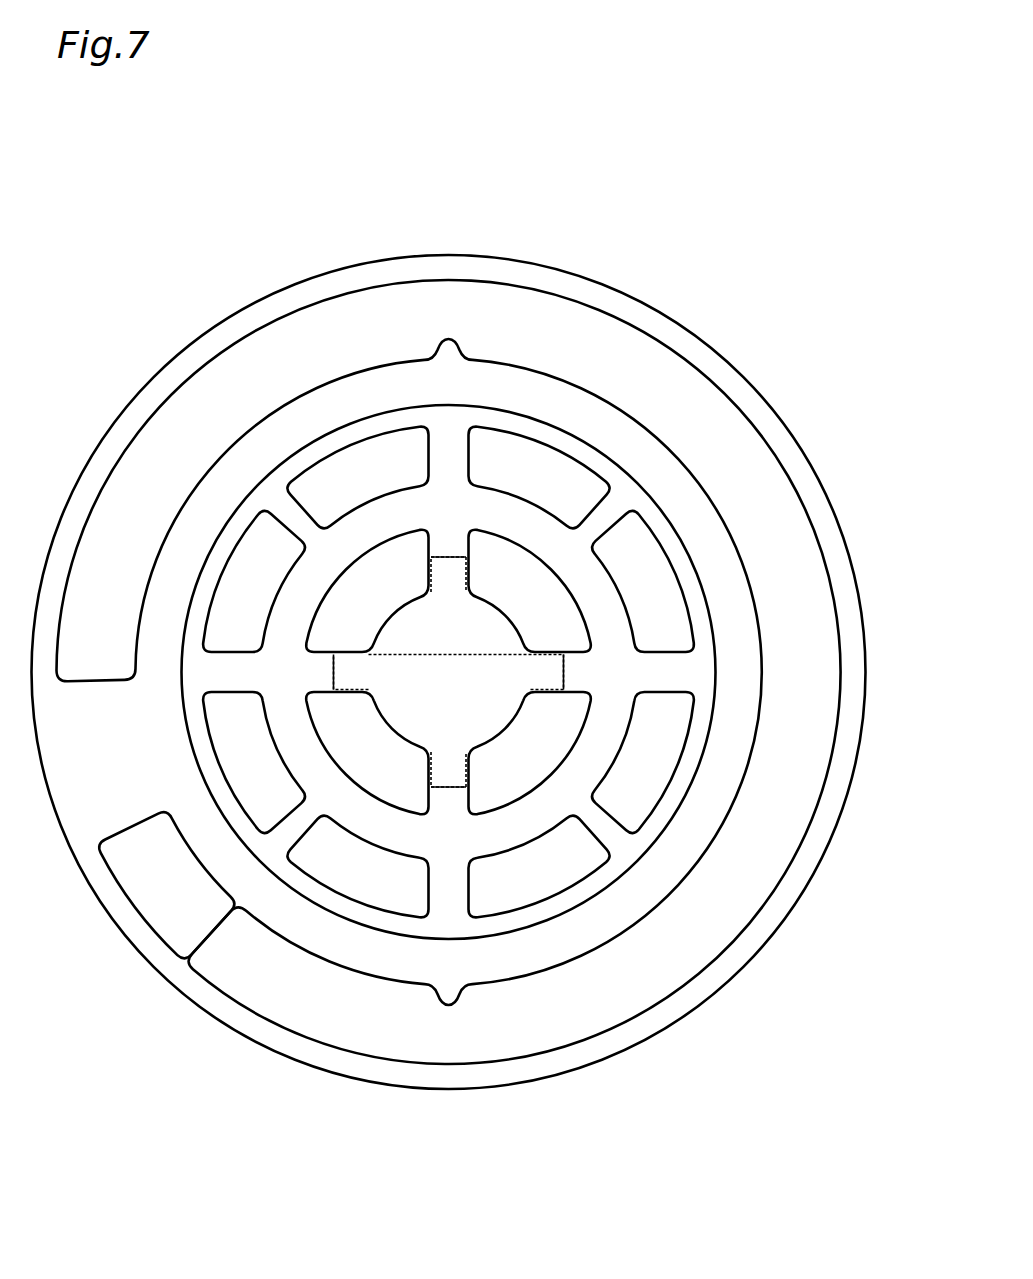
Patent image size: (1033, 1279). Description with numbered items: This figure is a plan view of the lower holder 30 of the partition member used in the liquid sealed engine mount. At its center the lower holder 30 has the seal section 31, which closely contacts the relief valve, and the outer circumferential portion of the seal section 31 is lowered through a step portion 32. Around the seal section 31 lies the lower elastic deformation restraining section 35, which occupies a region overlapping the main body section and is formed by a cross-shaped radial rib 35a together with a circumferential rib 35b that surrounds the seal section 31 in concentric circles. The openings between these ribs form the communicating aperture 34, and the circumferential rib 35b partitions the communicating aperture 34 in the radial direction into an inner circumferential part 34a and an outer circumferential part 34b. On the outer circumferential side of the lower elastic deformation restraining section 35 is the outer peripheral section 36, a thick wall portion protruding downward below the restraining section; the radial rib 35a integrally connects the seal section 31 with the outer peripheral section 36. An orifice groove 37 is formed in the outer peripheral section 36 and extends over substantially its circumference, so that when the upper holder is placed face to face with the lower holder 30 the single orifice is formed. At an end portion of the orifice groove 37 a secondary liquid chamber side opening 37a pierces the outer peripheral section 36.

The lower holder 30 is at (594, 254).
The seal section 31 is at (499, 549).
The step portion 32 is at (350, 658).
The communicating aperture 34 is at (827, 330).
The inner circumferential part 34a is at (573, 625).
The outer circumferential part 34b is at (637, 538).
The lower elastic deformation restraining section 35 is at (827, 956).
The radial rib 35a is at (437, 455).
The circumferential rib 35b is at (603, 757).
The outer peripheral section 36 is at (67, 800).
The orifice groove 37 is at (270, 988).
The secondary liquid chamber side opening 37a is at (143, 883).